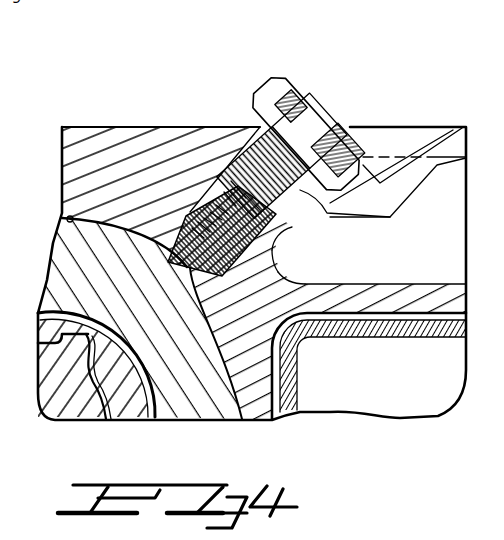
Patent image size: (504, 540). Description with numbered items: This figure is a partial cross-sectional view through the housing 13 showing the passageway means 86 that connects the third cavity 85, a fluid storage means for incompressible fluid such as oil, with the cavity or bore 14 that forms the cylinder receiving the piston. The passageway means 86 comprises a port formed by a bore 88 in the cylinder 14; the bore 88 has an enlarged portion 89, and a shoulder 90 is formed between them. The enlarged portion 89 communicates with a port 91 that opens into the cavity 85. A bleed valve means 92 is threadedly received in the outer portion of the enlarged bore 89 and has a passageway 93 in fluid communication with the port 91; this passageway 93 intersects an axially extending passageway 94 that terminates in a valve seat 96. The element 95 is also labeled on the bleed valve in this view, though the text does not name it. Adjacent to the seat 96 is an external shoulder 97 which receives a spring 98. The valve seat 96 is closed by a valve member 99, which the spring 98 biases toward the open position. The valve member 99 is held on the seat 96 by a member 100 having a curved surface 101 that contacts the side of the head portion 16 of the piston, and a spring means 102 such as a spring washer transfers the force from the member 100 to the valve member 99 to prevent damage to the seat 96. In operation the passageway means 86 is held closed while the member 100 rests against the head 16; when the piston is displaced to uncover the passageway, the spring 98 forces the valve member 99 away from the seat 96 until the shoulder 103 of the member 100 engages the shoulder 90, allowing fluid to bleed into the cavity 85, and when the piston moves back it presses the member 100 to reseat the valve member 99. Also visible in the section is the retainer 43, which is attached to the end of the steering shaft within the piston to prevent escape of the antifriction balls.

The cavity or bore 14 is at (72, 212).
The member 100 is at (188, 235).
The spring means 102 is at (194, 228).
The valve member 99 is at (199, 222).
The valve seat 96 is at (206, 218).
The spring 98 is at (213, 214).
The bushing 95 is at (232, 205).
The axially extending passageway 94 is at (240, 198).
The passageway 93 is at (250, 170).
The bleed valve means 92 is at (315, 110).
The passageway means 86 is at (336, 106).
The third cavity 85 is at (450, 193).
The port 91 is at (287, 220).
The external shoulder 97 is at (282, 237).
The enlarged portion 89 is at (288, 250).
The shoulder 90 is at (282, 262).
The curved surface 101 is at (187, 270).
The shoulder 103 is at (193, 283).
The bore 88 is at (202, 270).
The housing 13 is at (67, 398).
The retainer 43 is at (120, 397).
The head portion 16 is at (215, 362).